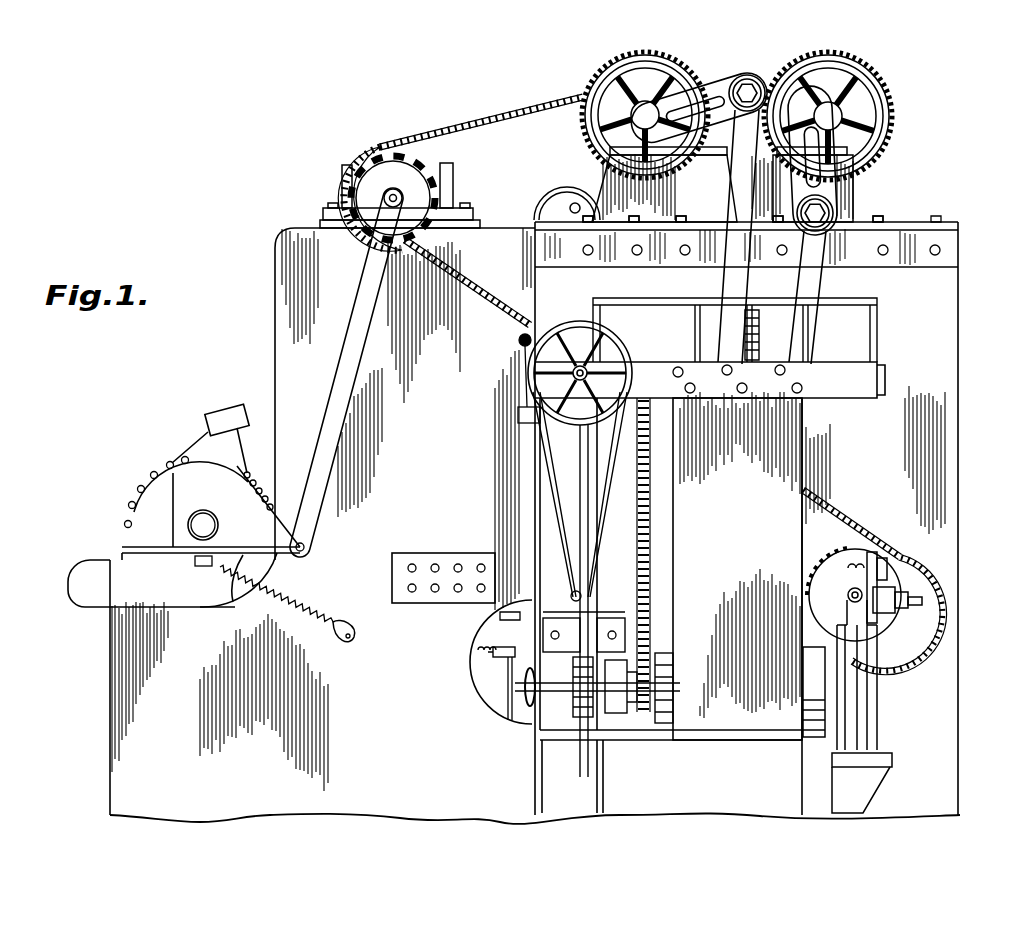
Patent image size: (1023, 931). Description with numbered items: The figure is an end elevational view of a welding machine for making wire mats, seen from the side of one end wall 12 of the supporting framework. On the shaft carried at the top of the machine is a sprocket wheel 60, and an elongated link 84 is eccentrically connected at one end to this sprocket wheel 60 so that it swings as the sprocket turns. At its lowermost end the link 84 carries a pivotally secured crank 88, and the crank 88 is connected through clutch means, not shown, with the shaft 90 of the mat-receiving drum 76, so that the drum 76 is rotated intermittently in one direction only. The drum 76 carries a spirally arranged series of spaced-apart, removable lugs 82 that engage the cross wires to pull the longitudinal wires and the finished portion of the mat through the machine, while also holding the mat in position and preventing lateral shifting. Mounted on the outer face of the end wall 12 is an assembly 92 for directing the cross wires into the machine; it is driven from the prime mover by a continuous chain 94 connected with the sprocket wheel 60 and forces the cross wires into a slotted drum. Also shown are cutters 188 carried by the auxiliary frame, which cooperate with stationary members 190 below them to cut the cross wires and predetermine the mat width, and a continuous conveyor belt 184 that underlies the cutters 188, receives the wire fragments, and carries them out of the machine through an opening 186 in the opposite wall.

The end wall 12 is at (405, 394).
The sprocket wheel 60 is at (430, 168).
The mat-receiving drum 76 is at (152, 503).
The removable lugs 82 is at (160, 466).
The elongated link 84 is at (352, 345).
The crank 88 is at (208, 428).
The shaft 90 is at (208, 512).
The cross-wire directing assembly 92 is at (737, 569).
The continuous chain 94 is at (478, 292).
The continuous conveyor belt 184 is at (488, 696).
The opening 186 is at (493, 672).
The cutters 188 is at (490, 628).
The stationary members 190 is at (482, 650).